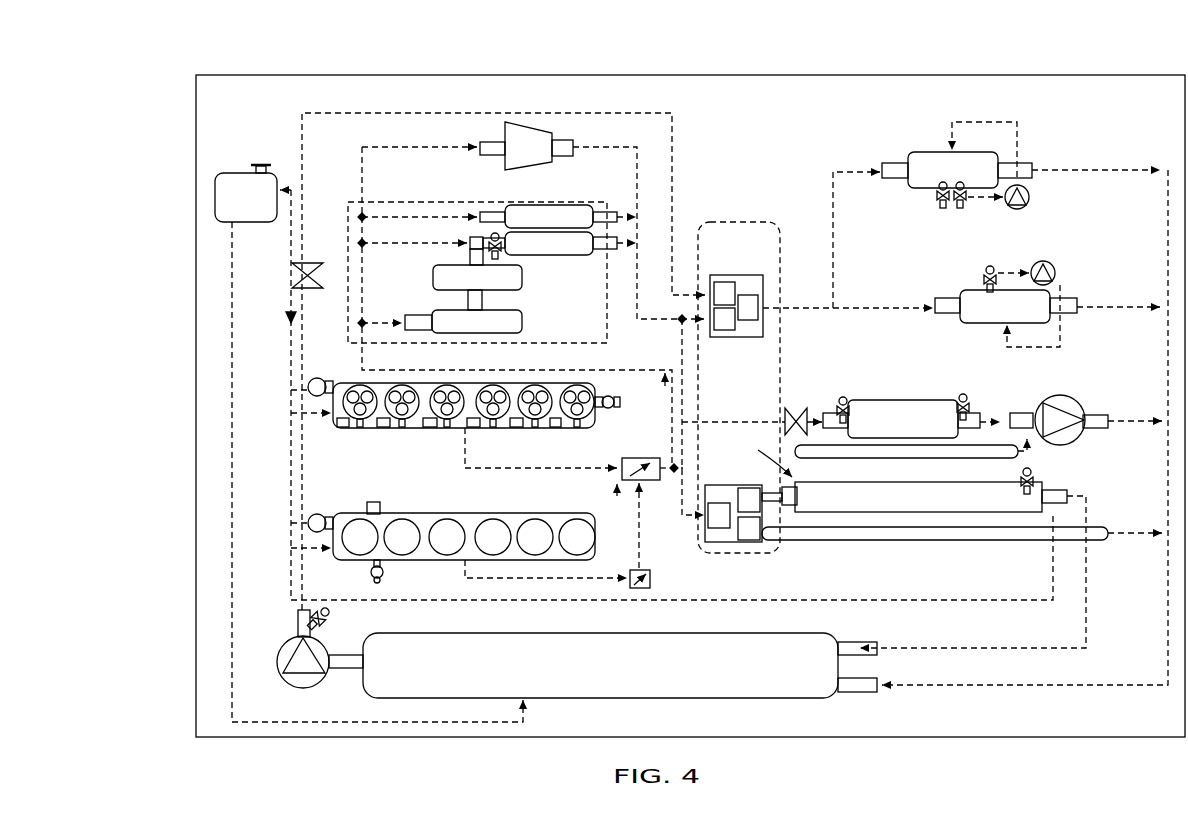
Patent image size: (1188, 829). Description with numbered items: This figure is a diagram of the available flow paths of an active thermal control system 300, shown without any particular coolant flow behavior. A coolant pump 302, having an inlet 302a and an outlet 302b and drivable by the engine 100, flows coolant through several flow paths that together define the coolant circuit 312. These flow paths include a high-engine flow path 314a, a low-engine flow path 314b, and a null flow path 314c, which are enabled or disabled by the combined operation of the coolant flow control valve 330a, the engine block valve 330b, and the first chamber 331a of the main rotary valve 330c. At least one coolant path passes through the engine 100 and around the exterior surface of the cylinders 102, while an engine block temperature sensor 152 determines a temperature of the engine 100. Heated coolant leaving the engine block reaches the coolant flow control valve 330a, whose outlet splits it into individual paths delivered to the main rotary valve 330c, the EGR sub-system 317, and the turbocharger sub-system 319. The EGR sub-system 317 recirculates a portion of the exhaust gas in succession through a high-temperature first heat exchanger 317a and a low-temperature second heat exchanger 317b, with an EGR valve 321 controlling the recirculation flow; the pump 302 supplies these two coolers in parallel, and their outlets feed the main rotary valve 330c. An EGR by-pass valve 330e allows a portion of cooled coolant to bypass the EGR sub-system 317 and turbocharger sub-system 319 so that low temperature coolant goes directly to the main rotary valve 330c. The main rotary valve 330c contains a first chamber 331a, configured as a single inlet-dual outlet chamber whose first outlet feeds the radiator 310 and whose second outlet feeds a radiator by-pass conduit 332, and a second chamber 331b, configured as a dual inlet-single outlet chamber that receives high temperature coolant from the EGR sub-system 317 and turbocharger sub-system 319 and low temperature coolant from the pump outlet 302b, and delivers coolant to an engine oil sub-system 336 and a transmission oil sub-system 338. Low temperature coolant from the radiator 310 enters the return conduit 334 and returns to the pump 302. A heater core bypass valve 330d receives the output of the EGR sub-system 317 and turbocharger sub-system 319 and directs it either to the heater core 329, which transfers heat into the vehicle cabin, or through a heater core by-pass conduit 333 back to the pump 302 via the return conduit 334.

The active thermal control system 300 is at (188, 76).
The coolant circuit 312 is at (268, 108).
The EGR sub-system 317 is at (346, 202).
The first heat exchanger (HT EGR) 317a is at (522, 326).
The second heat exchanger (LT EGR) 317b is at (571, 256).
The turbocharger sub-system 319 is at (548, 122).
The EGR valve 321 is at (433, 277).
The coolant flow control valve (FCV) 330a is at (657, 480).
The engine block valve 330b is at (652, 580).
The main rotary valve 330c is at (740, 222).
The heater core bypass valve 330d is at (797, 408).
The EGR by-pass valve 330e is at (310, 263).
The first chamber 331a is at (736, 485).
The second chamber 331b is at (737, 275).
The high-engine flow path 314a is at (617, 498).
The low-engine flow path 314b is at (665, 387).
The null flow path 314c is at (768, 453).
The engine 100 is at (371, 420).
The cylinders 102 is at (347, 528).
The engine block temperature sensor 152 is at (384, 571).
The coolant pump 302 is at (281, 668).
The pump inlet 302a is at (350, 669).
The pump outlet 302b is at (297, 622).
The return conduit 334 is at (838, 636).
The engine oil sub-system 336 is at (932, 152).
The transmission oil sub-system 338 is at (972, 290).
The heater core 329 is at (940, 440).
The radiator 310 is at (993, 513).
The radiator by-pass conduit 332 is at (843, 541).
The heater core by-pass conduit 333 is at (838, 460).